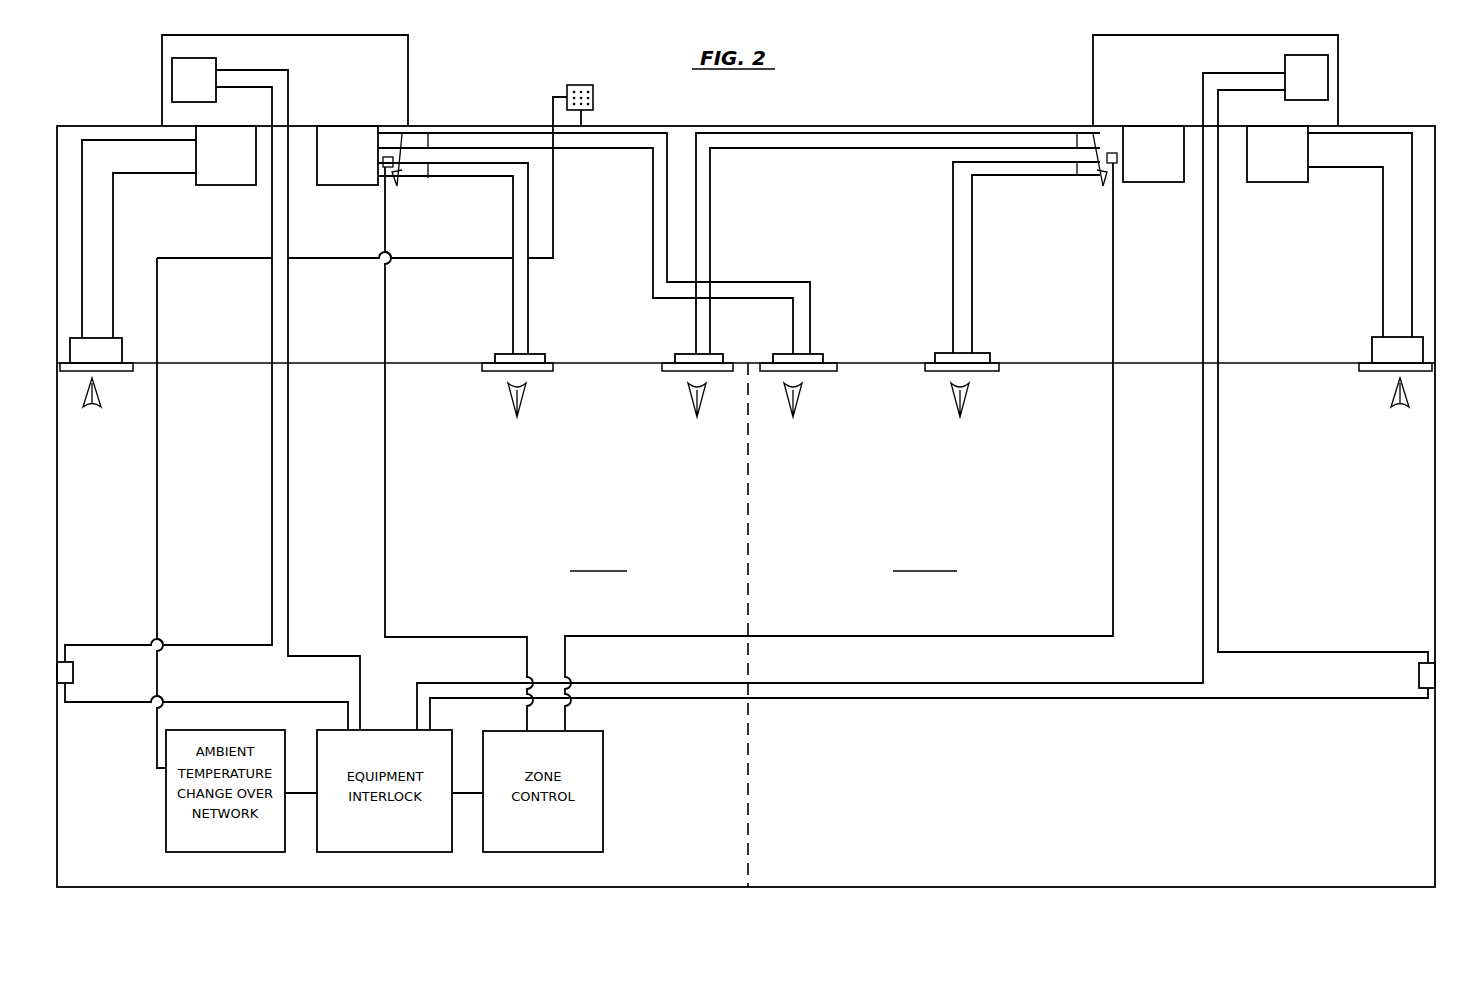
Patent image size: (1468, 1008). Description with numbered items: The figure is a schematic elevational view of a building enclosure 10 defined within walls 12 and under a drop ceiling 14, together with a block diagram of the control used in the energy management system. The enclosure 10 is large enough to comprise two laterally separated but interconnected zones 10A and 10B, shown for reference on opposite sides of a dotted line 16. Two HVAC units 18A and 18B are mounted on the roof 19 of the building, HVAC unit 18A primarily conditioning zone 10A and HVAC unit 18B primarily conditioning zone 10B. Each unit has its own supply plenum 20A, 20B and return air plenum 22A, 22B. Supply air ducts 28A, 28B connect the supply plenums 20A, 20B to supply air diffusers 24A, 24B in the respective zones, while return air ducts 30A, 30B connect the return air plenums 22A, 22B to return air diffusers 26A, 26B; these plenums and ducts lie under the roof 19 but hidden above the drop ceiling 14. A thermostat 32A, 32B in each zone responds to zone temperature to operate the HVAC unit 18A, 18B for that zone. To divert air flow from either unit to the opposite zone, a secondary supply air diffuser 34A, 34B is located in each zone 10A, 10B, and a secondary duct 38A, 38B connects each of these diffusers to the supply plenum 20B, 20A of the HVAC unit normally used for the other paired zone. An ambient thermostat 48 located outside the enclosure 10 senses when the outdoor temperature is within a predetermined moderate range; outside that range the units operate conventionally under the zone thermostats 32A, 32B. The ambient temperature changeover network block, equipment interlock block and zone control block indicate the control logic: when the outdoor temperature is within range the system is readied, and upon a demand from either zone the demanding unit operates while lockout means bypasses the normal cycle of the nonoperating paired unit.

The building enclosure 10 is at (898, 112).
The zone 10A is at (612, 515).
The zone 10B is at (879, 515).
The walls 12 is at (59, 553).
The drop ceiling 14 is at (424, 368).
The dotted line 16 is at (748, 764).
The HVAC unit 18A is at (410, 63).
The HVAC unit 18B is at (1093, 52).
The roof 19 is at (820, 126).
The supply plenum 20A is at (338, 187).
The supply plenum 20B is at (1150, 184).
The return air plenum 22A is at (222, 187).
The return air plenum 22B is at (1285, 184).
The supply air diffusers 24A is at (545, 373).
The supply air diffusers 24B is at (987, 373).
The return air diffuser 26A is at (116, 372).
The return air diffuser 26B is at (1372, 375).
The supply air ducts 28A is at (528, 293).
The supply air ducts 28B is at (972, 275).
The return air duct 30A is at (113, 247).
The return air duct 30B is at (1383, 283).
The thermostat 32A is at (75, 672).
The thermostat 32B is at (1419, 675).
The secondary supply air diffuser 34A is at (668, 373).
The secondary supply air diffuser 34B is at (817, 373).
The secondary duct 38A is at (653, 241).
The secondary duct 38B is at (711, 223).
The ambient thermostat 48 is at (577, 82).